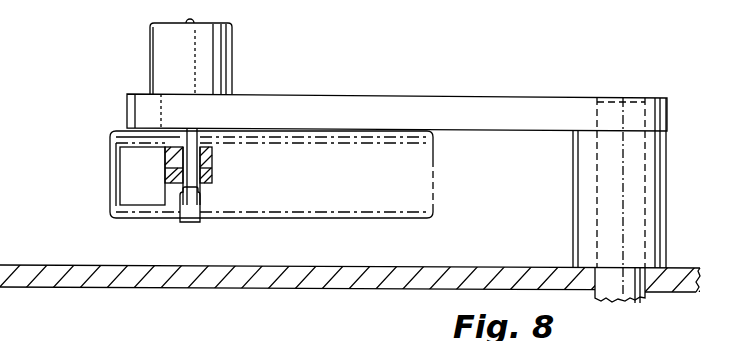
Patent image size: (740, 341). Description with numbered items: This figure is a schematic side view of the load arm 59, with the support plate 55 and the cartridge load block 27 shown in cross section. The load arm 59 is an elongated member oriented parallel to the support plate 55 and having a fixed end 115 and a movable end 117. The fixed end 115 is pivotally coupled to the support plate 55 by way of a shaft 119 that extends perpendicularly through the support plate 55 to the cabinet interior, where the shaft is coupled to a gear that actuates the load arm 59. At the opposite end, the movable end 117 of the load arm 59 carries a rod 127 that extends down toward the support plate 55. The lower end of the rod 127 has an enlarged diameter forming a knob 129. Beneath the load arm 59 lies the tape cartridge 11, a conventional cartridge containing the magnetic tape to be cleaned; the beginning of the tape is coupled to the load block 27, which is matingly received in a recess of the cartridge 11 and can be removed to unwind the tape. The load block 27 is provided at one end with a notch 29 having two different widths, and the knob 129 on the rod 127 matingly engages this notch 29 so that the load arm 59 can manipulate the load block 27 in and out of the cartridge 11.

The tape cartridge 11 is at (433, 162).
The load block 27 is at (212, 152).
The notch 29 is at (208, 177).
The support plate 55 is at (62, 265).
The load arm 59 is at (388, 97).
The fixed end 115 is at (570, 98).
The movable end 117 is at (138, 93).
The shaft 119 is at (622, 305).
The rod 127 is at (165, 165).
The knob 129 is at (190, 222).